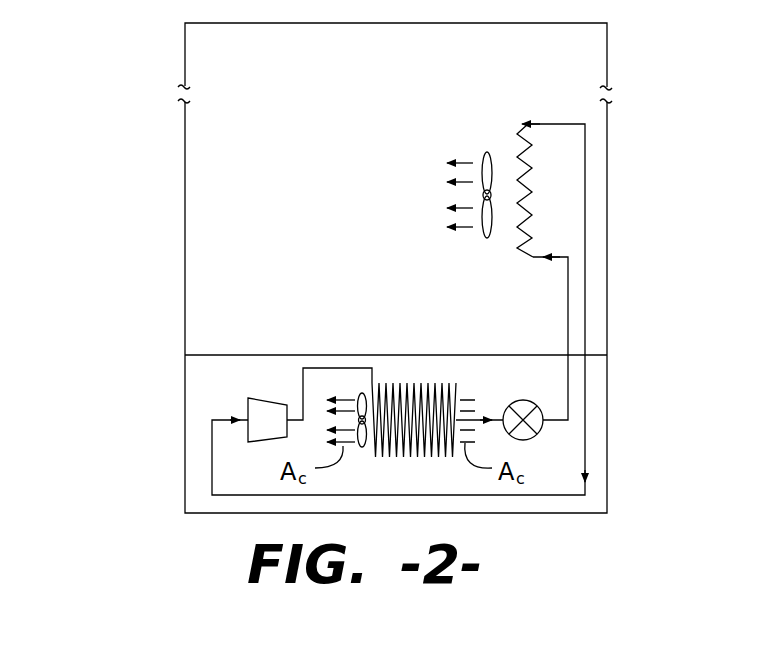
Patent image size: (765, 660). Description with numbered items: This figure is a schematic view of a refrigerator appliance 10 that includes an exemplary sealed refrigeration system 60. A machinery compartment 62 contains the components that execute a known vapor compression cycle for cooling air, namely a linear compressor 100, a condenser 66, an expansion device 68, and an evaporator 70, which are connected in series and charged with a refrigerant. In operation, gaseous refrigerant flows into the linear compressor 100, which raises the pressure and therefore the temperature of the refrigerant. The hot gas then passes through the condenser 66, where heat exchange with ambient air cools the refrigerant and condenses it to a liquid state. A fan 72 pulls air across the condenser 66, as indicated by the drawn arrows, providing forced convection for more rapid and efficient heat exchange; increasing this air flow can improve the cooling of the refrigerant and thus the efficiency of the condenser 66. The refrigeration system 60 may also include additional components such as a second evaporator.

The refrigerator appliance 10 is at (127, 142).
The sealed refrigeration system 60 is at (383, 343).
The machinery compartment 62 is at (222, 386).
The condenser 66 is at (422, 380).
The expansion device 68 is at (511, 406).
The evaporator 70 is at (518, 160).
The fan 72 is at (360, 400).
The linear compressor 100 is at (262, 400).